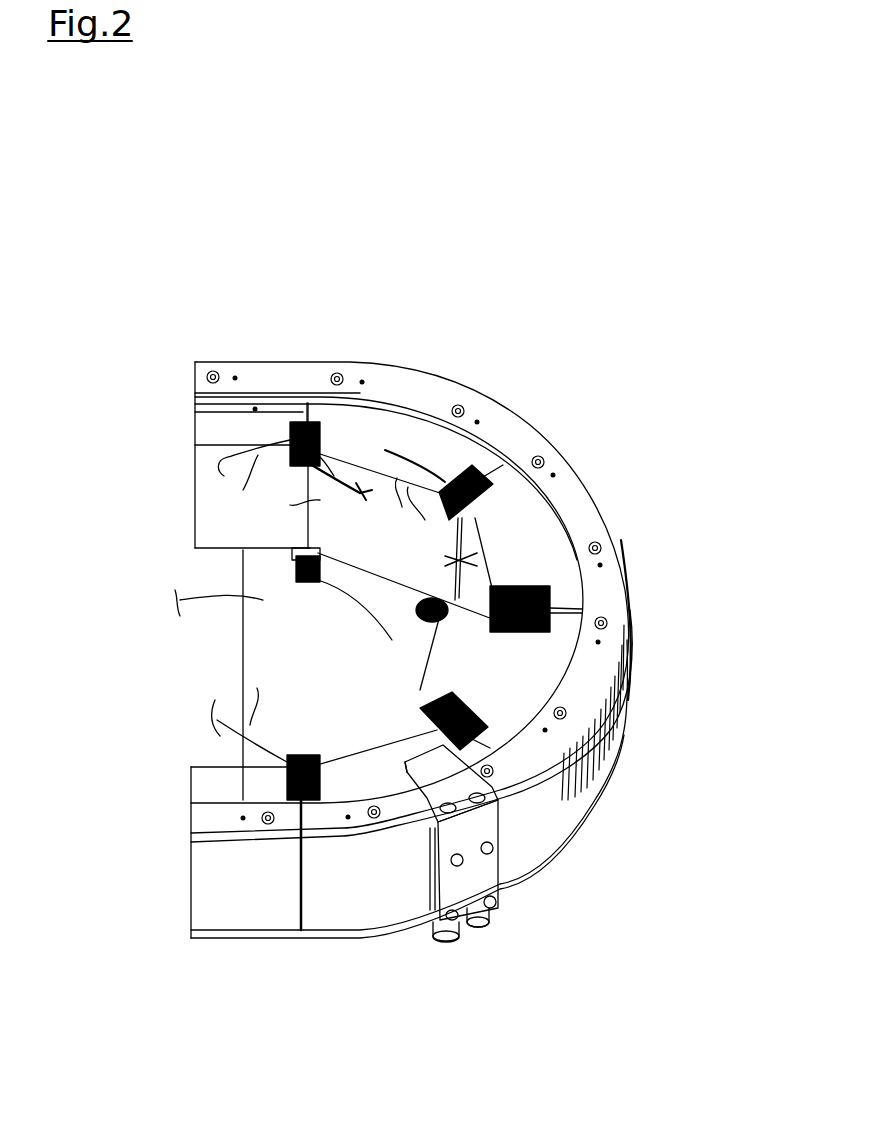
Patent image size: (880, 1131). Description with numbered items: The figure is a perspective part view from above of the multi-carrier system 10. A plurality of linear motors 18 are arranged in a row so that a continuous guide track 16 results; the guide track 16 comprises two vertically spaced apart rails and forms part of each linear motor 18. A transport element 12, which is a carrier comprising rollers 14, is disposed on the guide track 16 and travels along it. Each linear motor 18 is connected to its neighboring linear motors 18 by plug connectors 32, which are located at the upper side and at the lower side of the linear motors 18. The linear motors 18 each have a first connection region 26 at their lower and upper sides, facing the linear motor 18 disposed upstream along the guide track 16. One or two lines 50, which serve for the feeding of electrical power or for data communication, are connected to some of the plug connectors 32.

The multi-carrier system 10 is at (553, 298).
The transport element 12 is at (470, 893).
The rollers 14 is at (490, 921).
The guide track 16 is at (625, 573).
The linear motor 18 is at (265, 435).
The first connection region 26 is at (460, 782).
The plug connector 32 is at (322, 438).
The line 50 is at (302, 498).